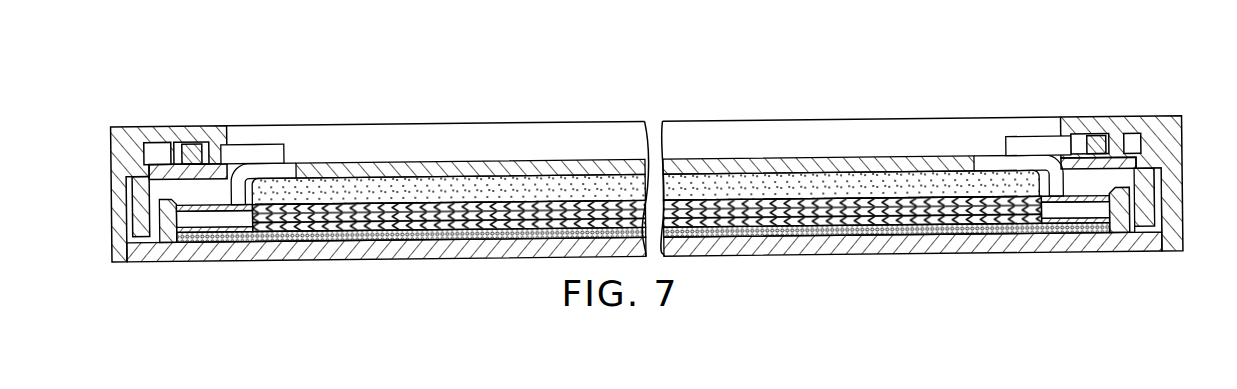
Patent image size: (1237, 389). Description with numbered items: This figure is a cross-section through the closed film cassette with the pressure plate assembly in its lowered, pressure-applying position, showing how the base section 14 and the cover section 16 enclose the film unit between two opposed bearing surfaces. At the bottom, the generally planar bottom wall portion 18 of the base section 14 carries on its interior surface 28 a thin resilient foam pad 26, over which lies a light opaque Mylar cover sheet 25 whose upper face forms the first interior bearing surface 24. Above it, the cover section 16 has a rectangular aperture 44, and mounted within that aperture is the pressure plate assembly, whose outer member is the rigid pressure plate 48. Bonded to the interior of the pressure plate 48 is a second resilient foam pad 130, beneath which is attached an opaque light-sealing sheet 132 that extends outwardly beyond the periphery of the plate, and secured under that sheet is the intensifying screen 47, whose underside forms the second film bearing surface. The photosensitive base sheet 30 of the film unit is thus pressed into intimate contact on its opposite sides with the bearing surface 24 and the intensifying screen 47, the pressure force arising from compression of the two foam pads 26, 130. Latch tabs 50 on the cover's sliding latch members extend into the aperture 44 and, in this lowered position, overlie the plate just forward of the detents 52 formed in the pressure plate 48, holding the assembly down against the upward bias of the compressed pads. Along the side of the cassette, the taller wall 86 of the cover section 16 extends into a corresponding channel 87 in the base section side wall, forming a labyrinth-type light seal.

The base section 14 is at (1193, 259).
The cover section 16 is at (1189, 111).
The bottom wall portion 18 is at (388, 252).
The first interior bearing surface 24 is at (226, 223).
The light opaque Mylar cover sheet 25 is at (218, 229).
The resilient foam pad 26 is at (188, 242).
The interior surface 28 is at (270, 236).
The base sheet 30 is at (486, 218).
The aperture 44 is at (360, 128).
The intensifying screen 47 is at (596, 212).
The pressure plate 48 is at (448, 163).
The latch tabs 50 is at (262, 157).
The detents 52 is at (291, 168).
The wall 86 is at (1148, 197).
The channel 87 is at (1145, 232).
The resilient foam pad 130 is at (528, 187).
The light-sealing sheet 132 is at (233, 206).